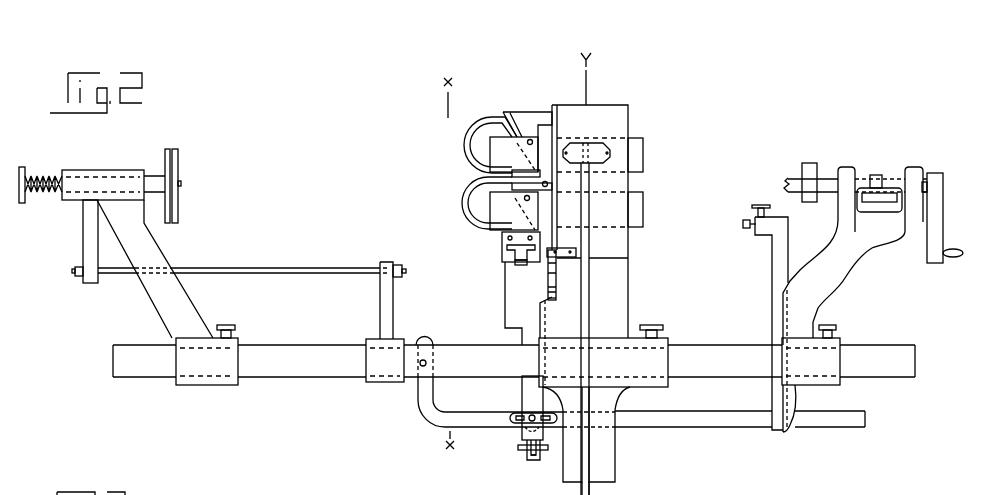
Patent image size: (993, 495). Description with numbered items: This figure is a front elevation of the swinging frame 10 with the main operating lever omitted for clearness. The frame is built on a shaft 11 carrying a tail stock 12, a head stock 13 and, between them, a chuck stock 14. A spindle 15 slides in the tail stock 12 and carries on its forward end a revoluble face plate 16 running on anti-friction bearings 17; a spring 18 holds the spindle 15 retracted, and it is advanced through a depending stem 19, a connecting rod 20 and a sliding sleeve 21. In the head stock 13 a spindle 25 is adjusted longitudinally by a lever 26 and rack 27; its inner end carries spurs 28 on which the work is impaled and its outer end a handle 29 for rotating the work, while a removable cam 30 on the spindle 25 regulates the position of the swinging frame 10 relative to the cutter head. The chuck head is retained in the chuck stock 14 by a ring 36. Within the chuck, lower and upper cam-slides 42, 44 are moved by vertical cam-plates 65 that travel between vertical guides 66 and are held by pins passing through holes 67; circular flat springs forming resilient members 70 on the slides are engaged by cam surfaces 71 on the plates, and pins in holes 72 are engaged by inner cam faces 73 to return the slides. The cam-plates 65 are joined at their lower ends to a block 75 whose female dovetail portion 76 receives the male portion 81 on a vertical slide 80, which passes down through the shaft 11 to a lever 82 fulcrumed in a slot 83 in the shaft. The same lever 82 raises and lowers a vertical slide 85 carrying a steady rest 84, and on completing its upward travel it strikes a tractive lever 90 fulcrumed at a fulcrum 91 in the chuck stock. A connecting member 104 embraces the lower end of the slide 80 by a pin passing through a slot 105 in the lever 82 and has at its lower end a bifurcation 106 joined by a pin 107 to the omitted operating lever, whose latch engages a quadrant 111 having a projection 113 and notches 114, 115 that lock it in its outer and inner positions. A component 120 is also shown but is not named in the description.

The swinging frame 10 is at (302, 197).
The shaft 11 is at (316, 384).
The tail stock 12 is at (150, 297).
The head stock 13 is at (832, 278).
The chuck stock 14 is at (607, 261).
The spindle 15 is at (154, 174).
The revoluble face plate 16 is at (180, 170).
The anti-friction bearings 17 is at (174, 150).
The spring 18 is at (44, 199).
The depending stem 19 is at (83, 250).
The connecting rod 20 is at (300, 275).
The sliding sleeve 21 is at (379, 385).
The spindle 25 is at (831, 177).
The lever 26 is at (877, 175).
The rack 27 is at (889, 188).
The spurs 28 is at (783, 183).
The handle 29 is at (944, 229).
The cam 30 is at (808, 163).
The ring 36 is at (552, 104).
The cam-slides 42 is at (645, 214).
The cam-slides 44 is at (645, 155).
The vertical cam-plates 65 is at (520, 110).
The vertical guides 66 is at (546, 168).
The holes 67 is at (547, 187).
The resilient members 70 is at (462, 146).
The cam surfaces 71 is at (497, 117).
The holes 72 is at (530, 139).
The inner cam faces 73 is at (515, 190).
The block 75 is at (502, 239).
The female portion of dovetail connection 76 is at (506, 252).
The vertical slide 80 is at (505, 303).
The male portion of dovetail connection 81 is at (517, 259).
The lever 82 is at (703, 427).
The slot 83 is at (585, 478).
The steady rest 84 is at (752, 206).
The vertical slide 85 is at (772, 258).
The tractive lever 90 is at (589, 290).
The fulcrum 91 is at (590, 404).
The connecting member 104 is at (522, 436).
The slot 105 is at (516, 417).
The bifurcation 106 is at (533, 460).
The pin 107 is at (519, 448).
The quadrant 111 is at (557, 280).
The projection 113 is at (557, 299).
The notch 114 is at (557, 293).
The notch 115 is at (562, 257).
The nut 120 is at (590, 146).